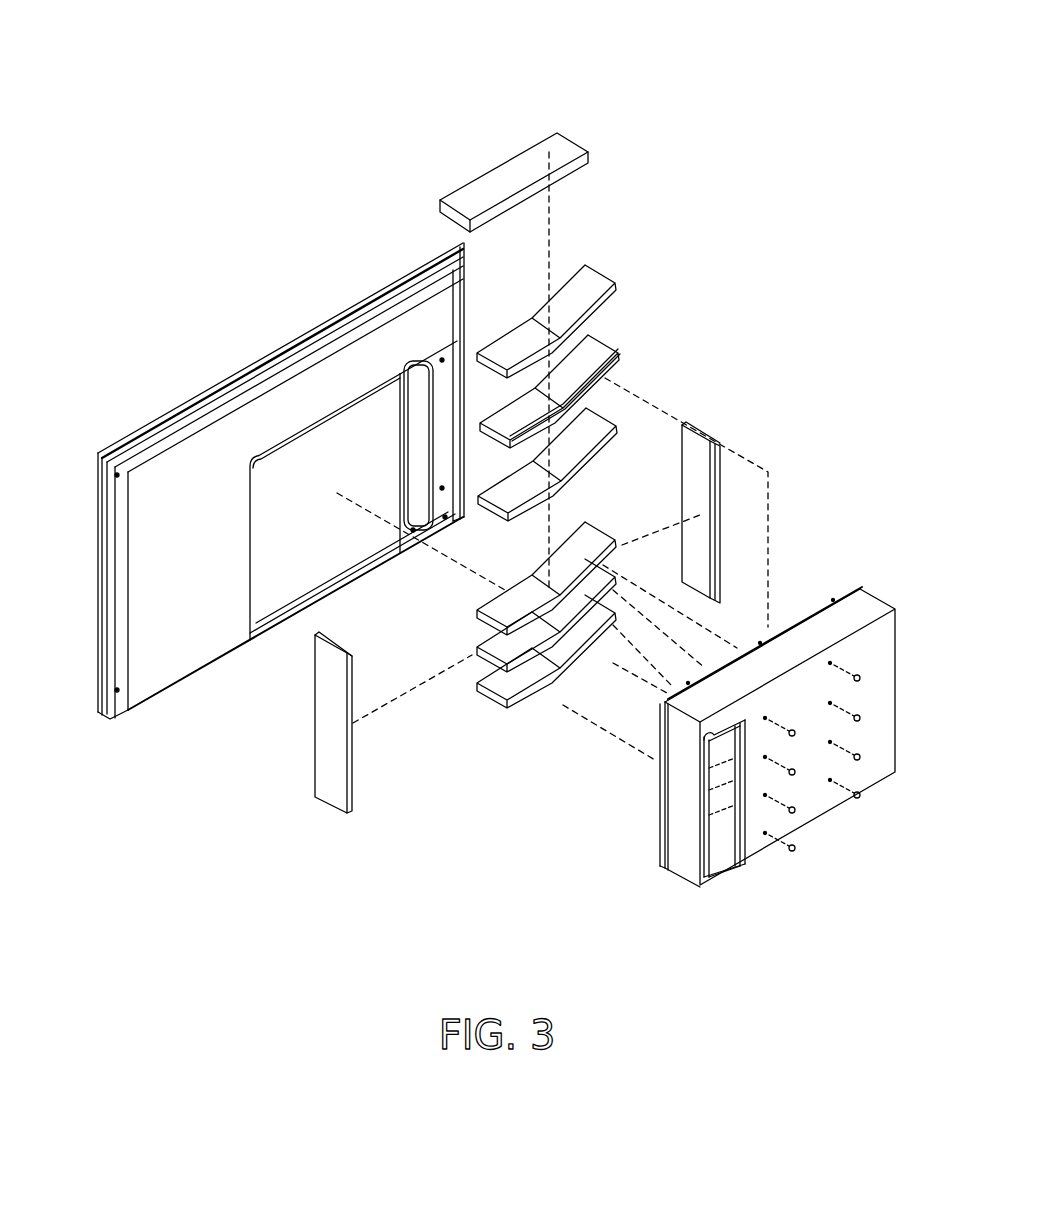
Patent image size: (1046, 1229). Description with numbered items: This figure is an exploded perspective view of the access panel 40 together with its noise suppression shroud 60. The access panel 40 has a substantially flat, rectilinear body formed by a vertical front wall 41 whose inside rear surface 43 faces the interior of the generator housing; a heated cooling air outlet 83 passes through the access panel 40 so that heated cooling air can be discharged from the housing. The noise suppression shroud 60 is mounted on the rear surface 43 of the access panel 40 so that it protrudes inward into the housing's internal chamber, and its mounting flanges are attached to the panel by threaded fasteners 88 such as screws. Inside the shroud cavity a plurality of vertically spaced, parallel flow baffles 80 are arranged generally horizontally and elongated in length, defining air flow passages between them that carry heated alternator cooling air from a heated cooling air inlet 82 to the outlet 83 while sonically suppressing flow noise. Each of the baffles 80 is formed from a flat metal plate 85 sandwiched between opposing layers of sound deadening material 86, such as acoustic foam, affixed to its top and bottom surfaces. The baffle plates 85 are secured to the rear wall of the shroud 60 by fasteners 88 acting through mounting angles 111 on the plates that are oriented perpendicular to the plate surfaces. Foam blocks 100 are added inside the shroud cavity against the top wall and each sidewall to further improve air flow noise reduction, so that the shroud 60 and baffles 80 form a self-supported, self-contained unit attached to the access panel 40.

The access panel 40 is at (156, 356).
The vertical front wall 41 is at (347, 427).
The rear surface 43 is at (287, 464).
The heated cooling air outlet 83 is at (433, 403).
The foam block 100 is at (568, 138).
The flat metal plate 85 is at (630, 365).
The sound deadening material 86 is at (598, 272).
The mounting angles 111 is at (607, 345).
The flow baffles 80 is at (461, 702).
The noise suppression shroud 60 is at (884, 586).
The heated cooling air inlet 82 is at (728, 842).
The fasteners 88 is at (800, 848).